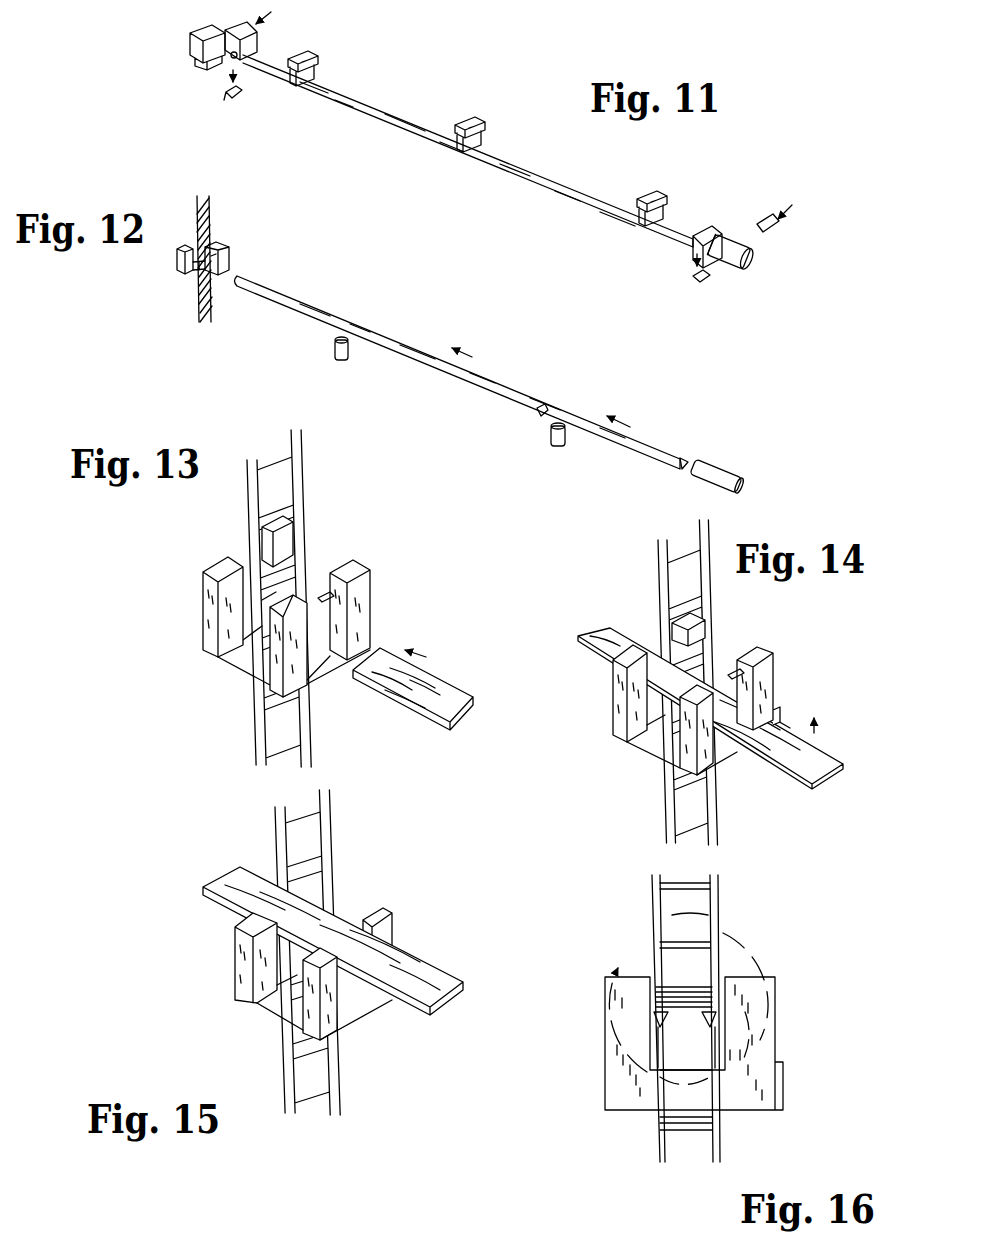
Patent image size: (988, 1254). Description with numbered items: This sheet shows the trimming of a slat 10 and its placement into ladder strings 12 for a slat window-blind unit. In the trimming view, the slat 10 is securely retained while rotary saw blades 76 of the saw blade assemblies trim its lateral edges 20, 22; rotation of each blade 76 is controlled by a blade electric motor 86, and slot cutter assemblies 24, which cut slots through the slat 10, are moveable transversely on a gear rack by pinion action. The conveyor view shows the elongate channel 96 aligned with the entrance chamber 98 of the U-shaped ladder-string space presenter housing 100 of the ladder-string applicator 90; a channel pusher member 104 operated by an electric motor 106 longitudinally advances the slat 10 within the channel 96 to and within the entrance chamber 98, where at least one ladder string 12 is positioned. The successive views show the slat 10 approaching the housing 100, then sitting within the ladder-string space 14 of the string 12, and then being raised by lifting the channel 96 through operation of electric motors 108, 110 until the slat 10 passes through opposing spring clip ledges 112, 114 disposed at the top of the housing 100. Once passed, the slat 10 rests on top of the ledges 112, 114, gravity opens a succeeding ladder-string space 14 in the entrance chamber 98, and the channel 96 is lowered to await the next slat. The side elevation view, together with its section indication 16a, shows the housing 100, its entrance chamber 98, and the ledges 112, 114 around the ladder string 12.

In FIG. 11, the wooden slat 10 is at (553, 180).
In FIG. 12, the wooden slat 10 is at (458, 372).
In FIG. 13, the wooden slat 10 is at (453, 690).
In FIG. 14, the wooden slat 10 is at (822, 764).
In FIG. 15, the wooden slat 10 is at (430, 973).
In FIG. 12, the ladder string 12 is at (204, 259).
In FIG. 13, the ladder string 12 is at (300, 467).
In FIG. 14, the ladder string 12 is at (688, 682).
In FIG. 15, the ladder string 12 is at (333, 1043).
In FIG. 16, the ladder string 12 is at (727, 1147).
In FIG. 13, the ladder-string space 14 is at (273, 593).
In FIG. 16, the ladder-string space 14 is at (663, 1120).
In FIG. 16, the section view indicator 16a is at (656, 917).
In FIG. 11, the lateral edge 20 is at (227, 95).
In FIG. 11, the lateral edge 22 is at (702, 279).
In FIG. 11, the slot cutter assembly 24 is at (316, 64).
In FIG. 11, the rotary saw blade 76 is at (252, 52).
In FIG. 11, the blade electric motor 86 is at (192, 52).
In FIG. 12, the ladder-string applicator 90 is at (186, 286).
In FIG. 13, the ladder-string applicator 90 is at (188, 633).
In FIG. 14, the ladder-string applicator 90 is at (635, 753).
In FIG. 15, the ladder-string applicator 90 is at (342, 964).
In FIG. 12, the elongate channel 96 is at (543, 410).
In FIG. 13, the entrance chamber 98 is at (313, 627).
In FIG. 13, the ladder-string space presenter housing 100 is at (307, 590).
In FIG. 14, the ladder-string space presenter housing 100 is at (720, 680).
In FIG. 16, the ladder-string space presenter housing 100 is at (767, 1050).
In FIG. 12, the channel pusher member 104 is at (681, 458).
In FIG. 12, the electric motor 106 is at (732, 472).
In FIG. 12, the electric motor 108 is at (336, 360).
In FIG. 12, the electric motor 110 is at (558, 448).
In FIG. 13, the spring clip ledge 112 is at (263, 547).
In FIG. 14, the spring clip ledge 112 is at (673, 636).
In FIG. 16, the spring clip ledge 112 is at (727, 1017).
In FIG. 16, the spring clip ledge 114 is at (655, 1020).